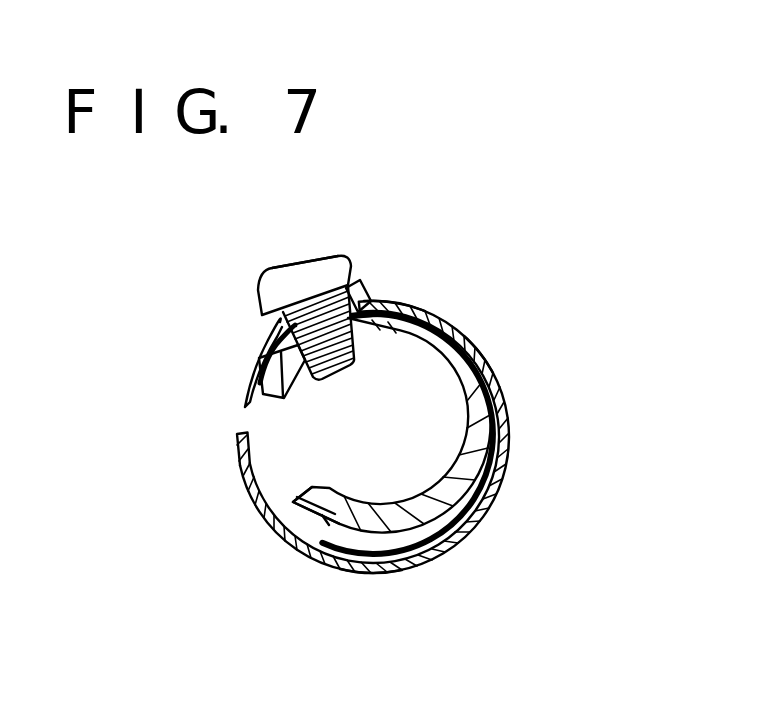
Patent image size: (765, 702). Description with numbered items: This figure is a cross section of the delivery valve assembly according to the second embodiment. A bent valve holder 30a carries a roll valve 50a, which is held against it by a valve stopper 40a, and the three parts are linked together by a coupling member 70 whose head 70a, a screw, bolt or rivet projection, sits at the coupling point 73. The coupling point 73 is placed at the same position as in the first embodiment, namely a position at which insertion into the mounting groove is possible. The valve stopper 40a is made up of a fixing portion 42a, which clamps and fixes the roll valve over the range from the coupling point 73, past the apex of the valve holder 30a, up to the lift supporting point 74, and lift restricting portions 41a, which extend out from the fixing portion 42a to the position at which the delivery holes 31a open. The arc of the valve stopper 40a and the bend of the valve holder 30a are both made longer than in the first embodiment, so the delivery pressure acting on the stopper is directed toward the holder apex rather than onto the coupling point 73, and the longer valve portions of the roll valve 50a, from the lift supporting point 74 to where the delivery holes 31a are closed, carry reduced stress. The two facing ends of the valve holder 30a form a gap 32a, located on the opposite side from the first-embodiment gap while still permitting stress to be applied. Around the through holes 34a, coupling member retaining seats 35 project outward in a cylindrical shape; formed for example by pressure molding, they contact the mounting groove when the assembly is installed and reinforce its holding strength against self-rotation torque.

The valve holder 30a is at (508, 398).
The delivery holes 31a is at (374, 567).
The gap 32a is at (243, 429).
The through holes 34a is at (280, 324).
The coupling member retaining seats 35 is at (358, 290).
The valve stopper 40a is at (474, 432).
The lift restricting portions 41a is at (327, 508).
The fixing portion 42a is at (407, 303).
The roll valve 50a is at (467, 509).
The coupling members 70 is at (285, 275).
The heads 70a is at (330, 270).
The coupling point 73 is at (359, 391).
The lift supporting point 74 is at (491, 334).